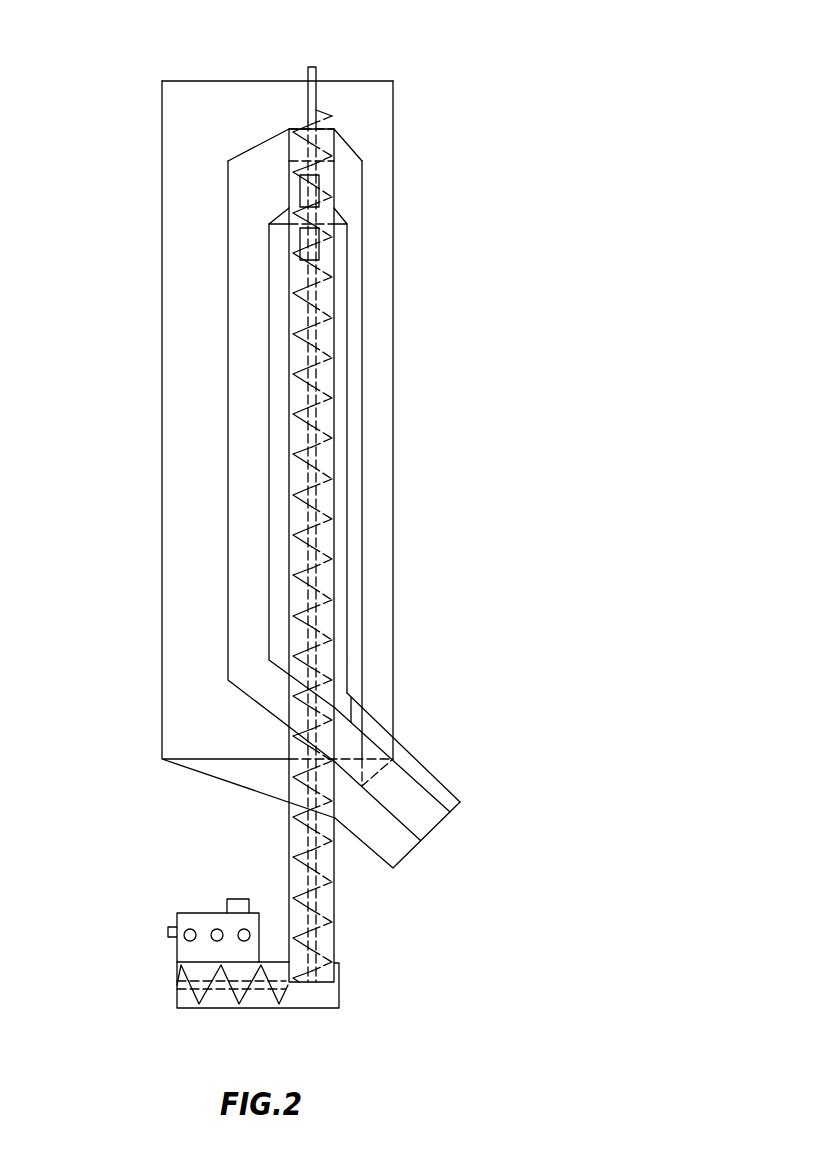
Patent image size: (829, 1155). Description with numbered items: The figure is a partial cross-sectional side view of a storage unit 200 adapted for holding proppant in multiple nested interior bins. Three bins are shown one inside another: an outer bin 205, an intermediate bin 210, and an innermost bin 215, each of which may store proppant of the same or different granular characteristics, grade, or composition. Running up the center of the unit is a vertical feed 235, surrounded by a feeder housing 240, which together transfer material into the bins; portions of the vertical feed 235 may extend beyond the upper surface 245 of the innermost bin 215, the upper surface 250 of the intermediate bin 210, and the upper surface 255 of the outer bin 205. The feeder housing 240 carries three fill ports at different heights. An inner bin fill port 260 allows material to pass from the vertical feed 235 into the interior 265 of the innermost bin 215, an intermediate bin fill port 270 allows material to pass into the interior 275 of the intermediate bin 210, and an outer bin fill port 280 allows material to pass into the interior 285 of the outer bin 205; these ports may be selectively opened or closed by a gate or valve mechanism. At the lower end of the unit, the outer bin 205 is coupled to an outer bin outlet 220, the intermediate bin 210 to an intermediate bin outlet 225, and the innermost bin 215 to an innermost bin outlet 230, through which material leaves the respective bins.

The storage unit 200 is at (551, 112).
The outer bin 205 is at (162, 432).
The intermediate bin 210 is at (228, 348).
The innermost bin 215 is at (269, 235).
The outer bin outlet 220 is at (410, 852).
The intermediate bin outlet 225 is at (442, 822).
The innermost bin outlet 230 is at (458, 805).
The vertical feed 235 is at (350, 930).
The feeder housing 240 is at (335, 510).
The upper surface of innermost bin 245 is at (342, 216).
The upper surface of intermediate bin 250 is at (352, 145).
The upper surface of outer bin 255 is at (375, 81).
The inner bin fill port 260 is at (319, 252).
The interior of innermost bin 265 is at (343, 462).
The intermediate bin fill port 270 is at (319, 181).
The interior of intermediate bin 275 is at (252, 286).
The outer bin fill port 280 is at (295, 128).
The interior of outer bin 285 is at (197, 567).